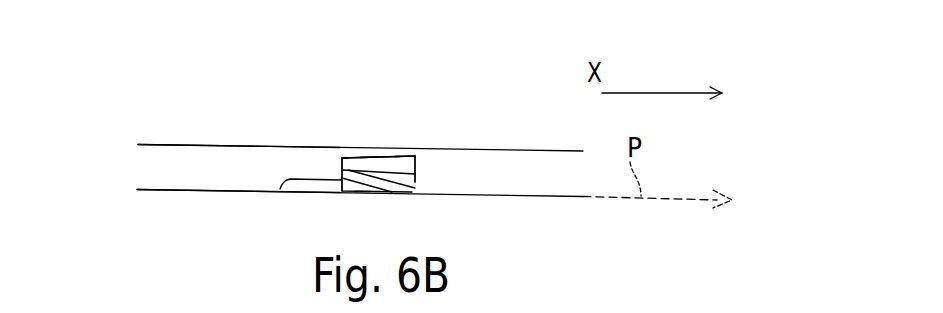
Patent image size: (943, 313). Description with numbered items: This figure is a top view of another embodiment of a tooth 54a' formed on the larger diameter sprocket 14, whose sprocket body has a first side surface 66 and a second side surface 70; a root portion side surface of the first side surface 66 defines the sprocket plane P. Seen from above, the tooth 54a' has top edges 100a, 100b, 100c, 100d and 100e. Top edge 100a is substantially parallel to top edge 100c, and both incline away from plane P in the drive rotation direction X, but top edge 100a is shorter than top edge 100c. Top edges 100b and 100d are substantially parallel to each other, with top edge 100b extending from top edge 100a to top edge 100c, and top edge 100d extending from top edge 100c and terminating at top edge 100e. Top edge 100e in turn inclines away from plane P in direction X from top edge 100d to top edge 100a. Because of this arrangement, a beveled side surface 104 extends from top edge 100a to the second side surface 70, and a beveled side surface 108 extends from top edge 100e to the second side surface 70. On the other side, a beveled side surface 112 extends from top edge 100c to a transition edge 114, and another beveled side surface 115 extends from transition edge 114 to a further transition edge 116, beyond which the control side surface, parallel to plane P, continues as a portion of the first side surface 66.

The larger diameter sprocket 14 is at (143, 167).
The second side surface 70 is at (160, 143).
The first side surface 66 is at (153, 192).
The tooth 54a' is at (312, 111).
The beveled side surface 108 is at (342, 157).
The top edge 100e is at (350, 157).
The top edge 100a is at (382, 157).
The beveled side surface 104 is at (399, 154).
The top edge 100b is at (420, 155).
The top edge 100c is at (412, 173).
The top edge 100d is at (340, 162).
The beveled side surface 112 is at (400, 170).
The transition edge 114 is at (388, 190).
The beveled side surface 115 is at (362, 183).
The transition edge 116 is at (342, 193).